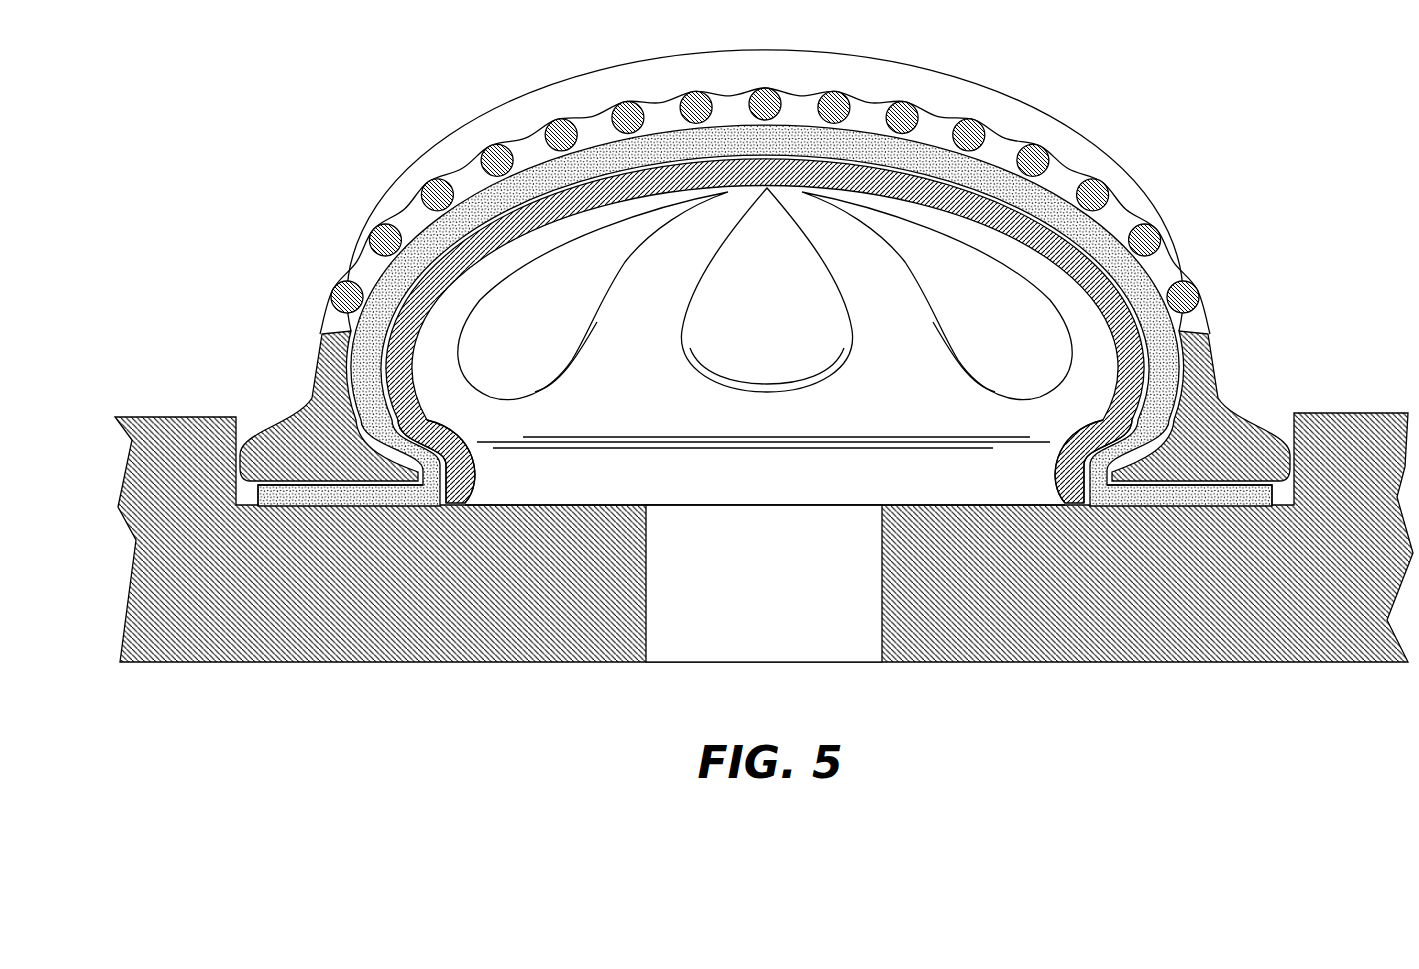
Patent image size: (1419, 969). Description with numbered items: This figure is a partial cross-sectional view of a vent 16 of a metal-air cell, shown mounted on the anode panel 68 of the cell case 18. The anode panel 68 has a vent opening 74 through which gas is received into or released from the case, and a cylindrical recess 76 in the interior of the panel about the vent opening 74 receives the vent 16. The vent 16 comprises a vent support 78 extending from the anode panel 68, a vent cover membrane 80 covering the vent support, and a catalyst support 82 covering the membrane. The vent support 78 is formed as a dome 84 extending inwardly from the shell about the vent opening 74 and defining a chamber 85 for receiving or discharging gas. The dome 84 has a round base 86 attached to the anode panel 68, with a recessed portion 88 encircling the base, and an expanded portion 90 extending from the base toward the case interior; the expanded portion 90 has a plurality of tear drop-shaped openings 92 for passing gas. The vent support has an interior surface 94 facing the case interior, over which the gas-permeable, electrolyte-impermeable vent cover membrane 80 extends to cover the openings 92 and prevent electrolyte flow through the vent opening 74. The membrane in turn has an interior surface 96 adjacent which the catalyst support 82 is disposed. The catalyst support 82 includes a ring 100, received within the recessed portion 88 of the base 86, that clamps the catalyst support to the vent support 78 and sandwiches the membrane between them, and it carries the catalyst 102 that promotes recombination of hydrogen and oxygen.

The vent 16 is at (779, 286).
The cell case 18 is at (764, 570).
The anode panel 68 is at (493, 662).
The vent opening 74 is at (807, 662).
The cylindrical recess 76 is at (540, 522).
The vent support 78 is at (789, 263).
The vent cover membrane 80 is at (422, 225).
The catalyst support 82 is at (765, 191).
The dome 84 is at (1135, 360).
The chamber 85 is at (841, 487).
The round base 86 is at (470, 490).
The recessed portion 88 is at (423, 433).
The expanded portion 90 is at (833, 263).
The tear drop-shaped openings 92 is at (678, 337).
The interior surface 94 is at (789, 263).
The interior surface 96 is at (1047, 185).
The ring 100 is at (286, 417).
The catalyst 102 is at (567, 118).